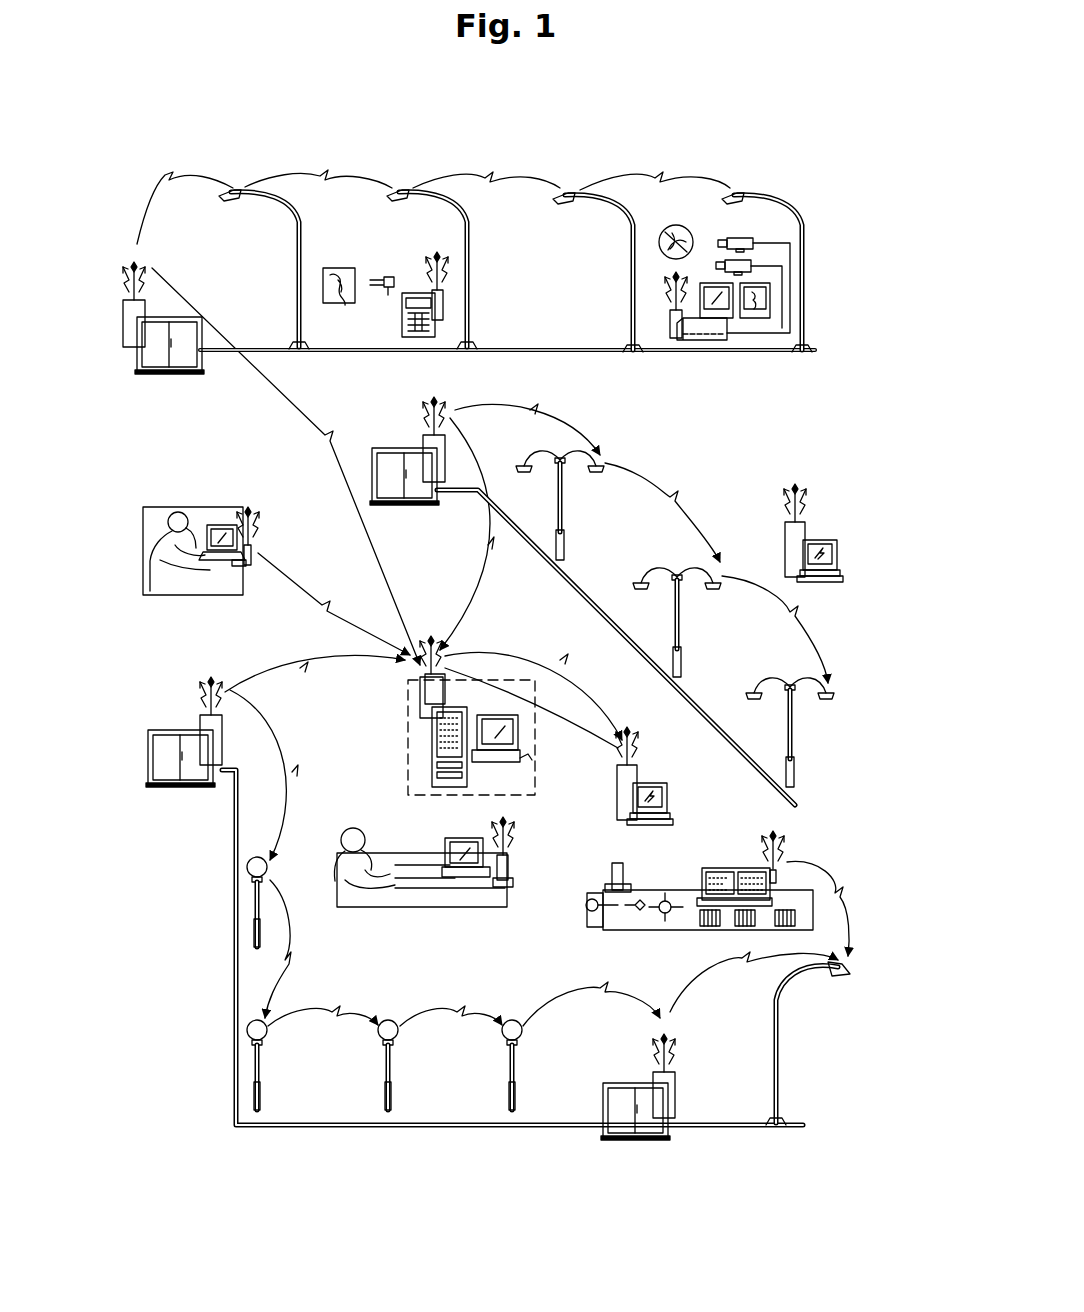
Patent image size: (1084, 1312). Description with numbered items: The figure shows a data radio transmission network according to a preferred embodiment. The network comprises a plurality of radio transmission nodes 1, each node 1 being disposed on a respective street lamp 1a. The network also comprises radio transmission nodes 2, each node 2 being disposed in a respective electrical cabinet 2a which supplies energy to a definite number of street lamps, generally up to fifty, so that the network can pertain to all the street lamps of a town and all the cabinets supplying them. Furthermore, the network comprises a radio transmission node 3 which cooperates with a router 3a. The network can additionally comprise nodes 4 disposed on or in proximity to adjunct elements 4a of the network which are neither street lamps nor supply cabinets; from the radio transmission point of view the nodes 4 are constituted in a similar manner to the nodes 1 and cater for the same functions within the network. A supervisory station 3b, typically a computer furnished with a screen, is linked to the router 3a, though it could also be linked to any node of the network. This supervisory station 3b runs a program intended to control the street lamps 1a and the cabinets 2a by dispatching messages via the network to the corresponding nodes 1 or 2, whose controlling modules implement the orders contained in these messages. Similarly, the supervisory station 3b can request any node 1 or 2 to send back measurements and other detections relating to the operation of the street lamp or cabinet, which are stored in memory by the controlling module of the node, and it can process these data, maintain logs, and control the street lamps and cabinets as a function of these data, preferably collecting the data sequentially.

The radio transmission node 1 is at (735, 176).
The street lamp 1a is at (315, 333).
The radio transmission node 2 is at (124, 337).
The electrical cabinet 2a is at (160, 378).
The radio transmission node 3 is at (418, 702).
The router 3a is at (440, 745).
The supervisory station 3b is at (500, 770).
The node 4 is at (452, 283).
The adjunct element 4a is at (390, 270).